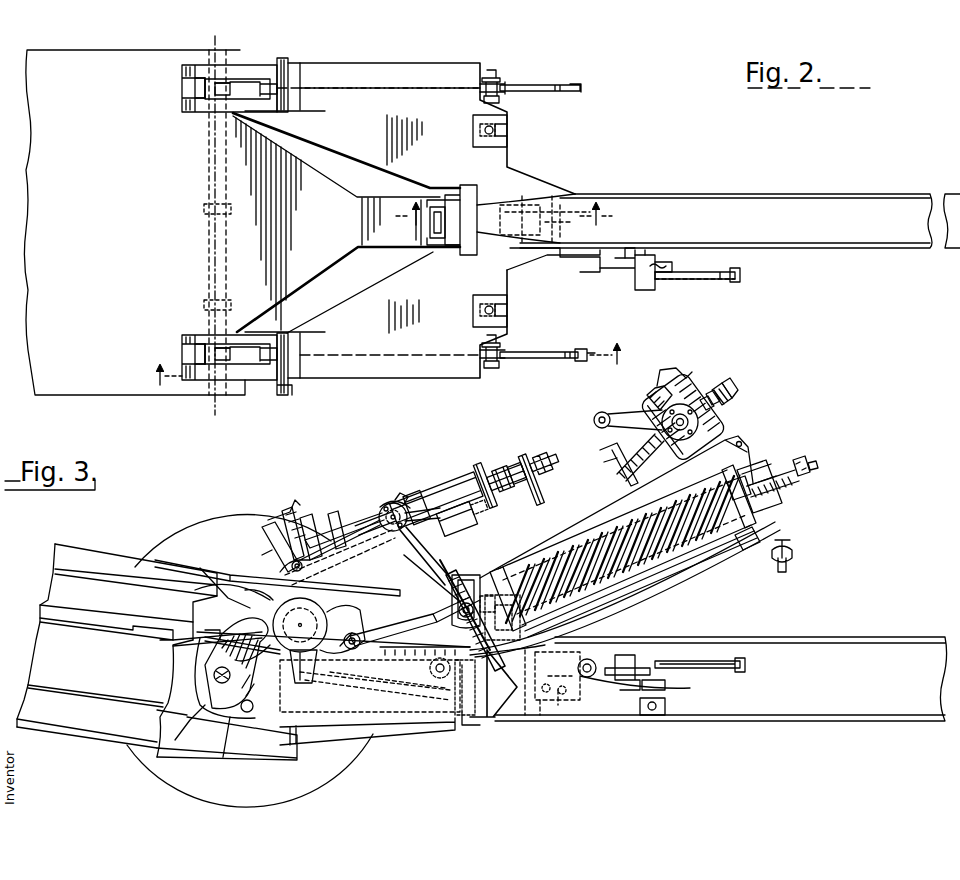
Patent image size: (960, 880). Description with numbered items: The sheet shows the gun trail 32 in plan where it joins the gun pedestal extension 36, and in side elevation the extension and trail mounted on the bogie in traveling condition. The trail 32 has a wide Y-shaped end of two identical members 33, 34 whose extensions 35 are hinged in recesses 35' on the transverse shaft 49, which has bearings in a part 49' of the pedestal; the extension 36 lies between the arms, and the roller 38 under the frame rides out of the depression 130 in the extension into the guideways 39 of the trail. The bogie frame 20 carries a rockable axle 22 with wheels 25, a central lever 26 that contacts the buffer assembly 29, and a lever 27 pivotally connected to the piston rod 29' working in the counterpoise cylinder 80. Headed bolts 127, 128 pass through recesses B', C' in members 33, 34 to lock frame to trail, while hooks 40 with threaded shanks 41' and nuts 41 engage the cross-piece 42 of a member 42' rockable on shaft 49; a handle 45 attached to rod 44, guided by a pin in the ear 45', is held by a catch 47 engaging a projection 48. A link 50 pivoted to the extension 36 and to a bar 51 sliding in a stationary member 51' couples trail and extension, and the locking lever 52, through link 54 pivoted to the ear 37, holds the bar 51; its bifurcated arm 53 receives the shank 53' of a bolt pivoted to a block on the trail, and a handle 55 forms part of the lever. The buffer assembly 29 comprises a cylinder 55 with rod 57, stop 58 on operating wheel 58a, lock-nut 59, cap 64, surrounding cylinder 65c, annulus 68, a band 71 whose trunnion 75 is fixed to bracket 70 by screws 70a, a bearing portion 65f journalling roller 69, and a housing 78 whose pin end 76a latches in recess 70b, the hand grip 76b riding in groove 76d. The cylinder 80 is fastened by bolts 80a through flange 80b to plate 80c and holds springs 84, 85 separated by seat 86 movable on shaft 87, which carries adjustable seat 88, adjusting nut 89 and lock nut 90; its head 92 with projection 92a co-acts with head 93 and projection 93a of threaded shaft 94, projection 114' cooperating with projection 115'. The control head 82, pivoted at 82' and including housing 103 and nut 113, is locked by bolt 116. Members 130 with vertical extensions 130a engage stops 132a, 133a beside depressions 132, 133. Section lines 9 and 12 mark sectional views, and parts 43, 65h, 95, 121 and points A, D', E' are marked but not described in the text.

In FIG. 2, the section line 9- 9 is at (504, 215).
In FIG. 2, the section line 12- 12 is at (389, 366).
In FIG. 3, the frame 20 is at (372, 588).
In FIG. 3, the axle 22 is at (330, 618).
In FIG. 3, the wheels 25 is at (206, 524).
In FIG. 3, the lever 26 is at (290, 586).
In FIG. 3, the lever 27 is at (350, 634).
In FIG. 3, the buffer assembly 29 is at (422, 496).
In FIG. 3, the piston rod 29' is at (415, 621).
In FIG. 2, the gun trail 32 is at (832, 194).
In FIG. 3, the gun trail 32 is at (875, 644).
In FIG. 2, the member 33 is at (460, 66).
In FIG. 2, the member 34 is at (474, 370).
In FIG. 2, the extensions 35 is at (211, 222).
In FIG. 3, the extensions 35 is at (199, 678).
In FIG. 2, the recesses 35' is at (177, 221).
In FIG. 2, the pedestal extension 36 is at (345, 193).
In FIG. 3, the pedestal extension 36 is at (394, 735).
In FIG. 2, the ear 37 is at (490, 205).
In FIG. 3, the ear 37 is at (496, 686).
In FIG. 3, the roller 38 is at (430, 670).
In FIG. 2, the guideways 39 is at (758, 198).
In FIG. 3, the hooks 40 is at (210, 648).
In FIG. 3, the nuts 41 is at (272, 547).
In FIG. 3, the threaded shanks 41' is at (284, 496).
In FIG. 2, the cross-piece 42 is at (342, 215).
In FIG. 3, the cross-piece 42 is at (232, 660).
In FIG. 2, the rockable member 42' is at (183, 222).
In FIG. 3, the rockable member 42' is at (184, 722).
In FIG. 2, the shaft end 43 is at (582, 352).
In FIG. 2, the rod 44 is at (350, 88).
In FIG. 3, the rod 44 is at (344, 686).
In FIG. 2, the handle 45 is at (545, 207).
In FIG. 3, the ear 45' is at (449, 652).
In FIG. 2, the catch 47 is at (500, 82).
In FIG. 2, the projection 48 is at (512, 88).
In FIG. 2, the transverse shaft 49 is at (205, 222).
In FIG. 3, the transverse shaft 49 is at (212, 689).
In FIG. 2, the pedestal part 49' is at (134, 222).
In FIG. 3, the pedestal part 49' is at (111, 650).
In FIG. 2, the link 50 is at (541, 220).
In FIG. 3, the link 50 is at (450, 687).
In FIG. 2, the bar 51 is at (525, 210).
In FIG. 3, the bar 51 is at (550, 682).
In FIG. 3, the stationary member 51' is at (545, 727).
In FIG. 2, the locking lever 52 is at (553, 260).
In FIG. 3, the locking lever 52 is at (541, 640).
In FIG. 2, the arm 53 is at (627, 270).
In FIG. 3, the arm 53 is at (627, 680).
In FIG. 2, the bolt shank 53' is at (670, 273).
In FIG. 3, the bolt shank 53' is at (666, 686).
In FIG. 2, the link 54 is at (553, 205).
In FIG. 3, the link 54 is at (558, 694).
In FIG. 2, the cylinder 55 is at (700, 276).
In FIG. 3, the cylinder 55 is at (440, 495).
In FIG. 3, the reciprocable rod 57 is at (518, 486).
In FIG. 3, the adjustable stop 58 is at (527, 495).
In FIG. 3, the operating wheel 58a is at (538, 462).
In FIG. 3, the lock-nut 59 is at (548, 480).
In FIG. 3, the cylinder cap 64 is at (504, 488).
In FIG. 3, the cylinder 65c is at (332, 518).
In FIG. 3, the bearing portion 65f is at (288, 518).
In FIG. 3, the link 65h is at (302, 515).
In FIG. 3, the annulus 68 is at (346, 518).
In FIG. 3, the roller 69 is at (288, 578).
In FIG. 3, the bracket 70 is at (388, 505).
In FIG. 3, the screws 70a is at (380, 520).
In FIG. 3, the recess 70b is at (430, 542).
In FIG. 3, the band 71 is at (400, 495).
In FIG. 3, the trunnion 75 is at (340, 557).
In FIG. 3, the pin end 76a is at (446, 514).
In FIG. 3, the hand grip 76b is at (484, 500).
In FIG. 3, the groove 76d is at (486, 488).
In FIG. 3, the cylindrical housing 78 is at (462, 508).
In FIG. 3, the cylinder 80 is at (722, 548).
In FIG. 3, the bolts 80a is at (470, 578).
In FIG. 3, the flange 80b is at (490, 578).
In FIG. 3, the plate 80c is at (462, 628).
In FIG. 3, the control head 82 is at (652, 392).
In FIG. 3, the pivot 82' is at (625, 503).
In FIG. 3, the spring 84 is at (595, 608).
In FIG. 3, the spring 85 is at (693, 566).
In FIG. 3, the spring seat 86 is at (640, 588).
In FIG. 3, the shaft 87 is at (668, 576).
In FIG. 3, the spring seat 88 is at (745, 538).
In FIG. 3, the adjusting nut 89 is at (764, 503).
In FIG. 3, the lock nut 90 is at (742, 482).
In FIG. 3, the head 92 is at (802, 458).
In FIG. 3, the projection 92a is at (818, 465).
In FIG. 3, the head 93 is at (733, 397).
In FIG. 3, the projection 93a is at (734, 386).
In FIG. 3, the threaded shaft 94 is at (660, 454).
In FIG. 3, the lever 95 is at (603, 412).
In FIG. 3, the housing 103 is at (722, 424).
In FIG. 3, the nut 113 is at (662, 422).
In FIG. 3, the projection 114' is at (721, 380).
In FIG. 3, the projection 115' is at (700, 386).
In FIG. 3, the bolt 116 is at (778, 568).
In FIG. 3, the plate 121 is at (230, 738).
In FIG. 2, the headed bolt 127 is at (491, 304).
In FIG. 3, the headed bolt 127 is at (488, 598).
In FIG. 2, the headed bolt 128 is at (494, 136).
In FIG. 2, the spaced member 130 is at (448, 228).
In FIG. 3, the vertical extension 130a is at (303, 684).
In FIG. 2, the depression 132 is at (314, 380).
In FIG. 2, the stop 132a is at (292, 385).
In FIG. 2, the depression 133 is at (302, 64).
In FIG. 2, the stop 133a is at (285, 62).
In FIG. 2, the axis A is at (212, 223).
In FIG. 2, the recess B' is at (521, 128).
In FIG. 2, the recess C' is at (521, 309).
In FIG. 2, the point D' is at (208, 104).
In FIG. 2, the point E' is at (209, 334).